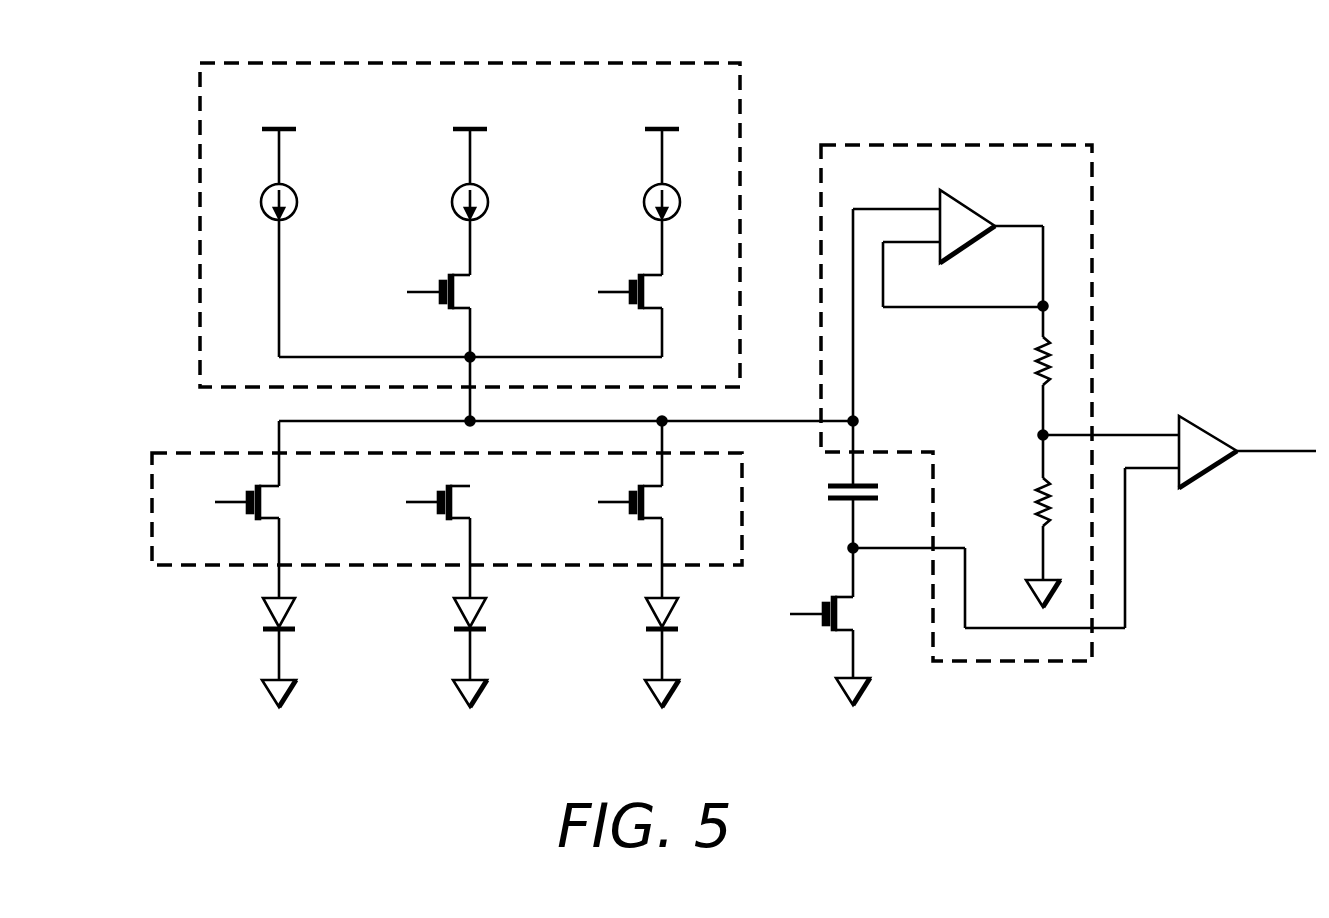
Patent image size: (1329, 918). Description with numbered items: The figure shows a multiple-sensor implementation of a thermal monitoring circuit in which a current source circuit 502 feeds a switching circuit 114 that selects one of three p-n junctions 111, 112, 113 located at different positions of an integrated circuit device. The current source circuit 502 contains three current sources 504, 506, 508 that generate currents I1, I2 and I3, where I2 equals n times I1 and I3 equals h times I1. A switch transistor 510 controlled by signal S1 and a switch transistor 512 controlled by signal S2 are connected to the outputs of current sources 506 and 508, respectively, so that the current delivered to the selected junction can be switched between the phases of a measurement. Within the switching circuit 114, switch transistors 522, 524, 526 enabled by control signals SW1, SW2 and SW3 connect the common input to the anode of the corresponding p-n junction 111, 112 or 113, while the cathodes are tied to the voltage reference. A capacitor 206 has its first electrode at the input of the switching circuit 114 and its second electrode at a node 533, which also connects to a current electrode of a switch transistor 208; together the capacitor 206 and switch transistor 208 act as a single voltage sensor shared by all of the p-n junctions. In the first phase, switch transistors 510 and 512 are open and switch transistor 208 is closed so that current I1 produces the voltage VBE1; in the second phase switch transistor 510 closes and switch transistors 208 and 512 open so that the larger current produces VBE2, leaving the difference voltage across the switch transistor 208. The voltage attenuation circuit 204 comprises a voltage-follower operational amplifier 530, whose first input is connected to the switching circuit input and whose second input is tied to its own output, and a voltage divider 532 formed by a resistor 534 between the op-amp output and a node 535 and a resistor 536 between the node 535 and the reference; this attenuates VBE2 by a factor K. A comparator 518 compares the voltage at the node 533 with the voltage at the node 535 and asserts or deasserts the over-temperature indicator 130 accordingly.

The current source circuit 502 is at (596, 63).
The current source 504 is at (262, 188).
The current source 506 is at (452, 188).
The current source 508 is at (644, 188).
The switch transistor 510 is at (458, 290).
The switch transistor 512 is at (648, 290).
The switching circuit 114 is at (178, 453).
The switch transistor 522 is at (268, 499).
The switch transistor 524 is at (459, 499).
The switch transistor 526 is at (648, 500).
The p-n junction 111 is at (264, 615).
The p-n junction 112 is at (455, 615).
The p-n junction 113 is at (647, 615).
The voltage attenuation circuit 204 is at (1060, 144).
The voltage-follower operational amplifier 530 is at (968, 200).
The voltage divider 532 is at (954, 383).
The resistor 534 is at (1032, 364).
The node 535 is at (1030, 438).
The resistor 536 is at (1032, 506).
The capacitor 206 is at (836, 482).
The node 533 is at (848, 548).
The switch transistor 208 is at (842, 612).
The comparator 518 is at (1200, 428).
The over-temperature indicator 130 is at (1278, 453).